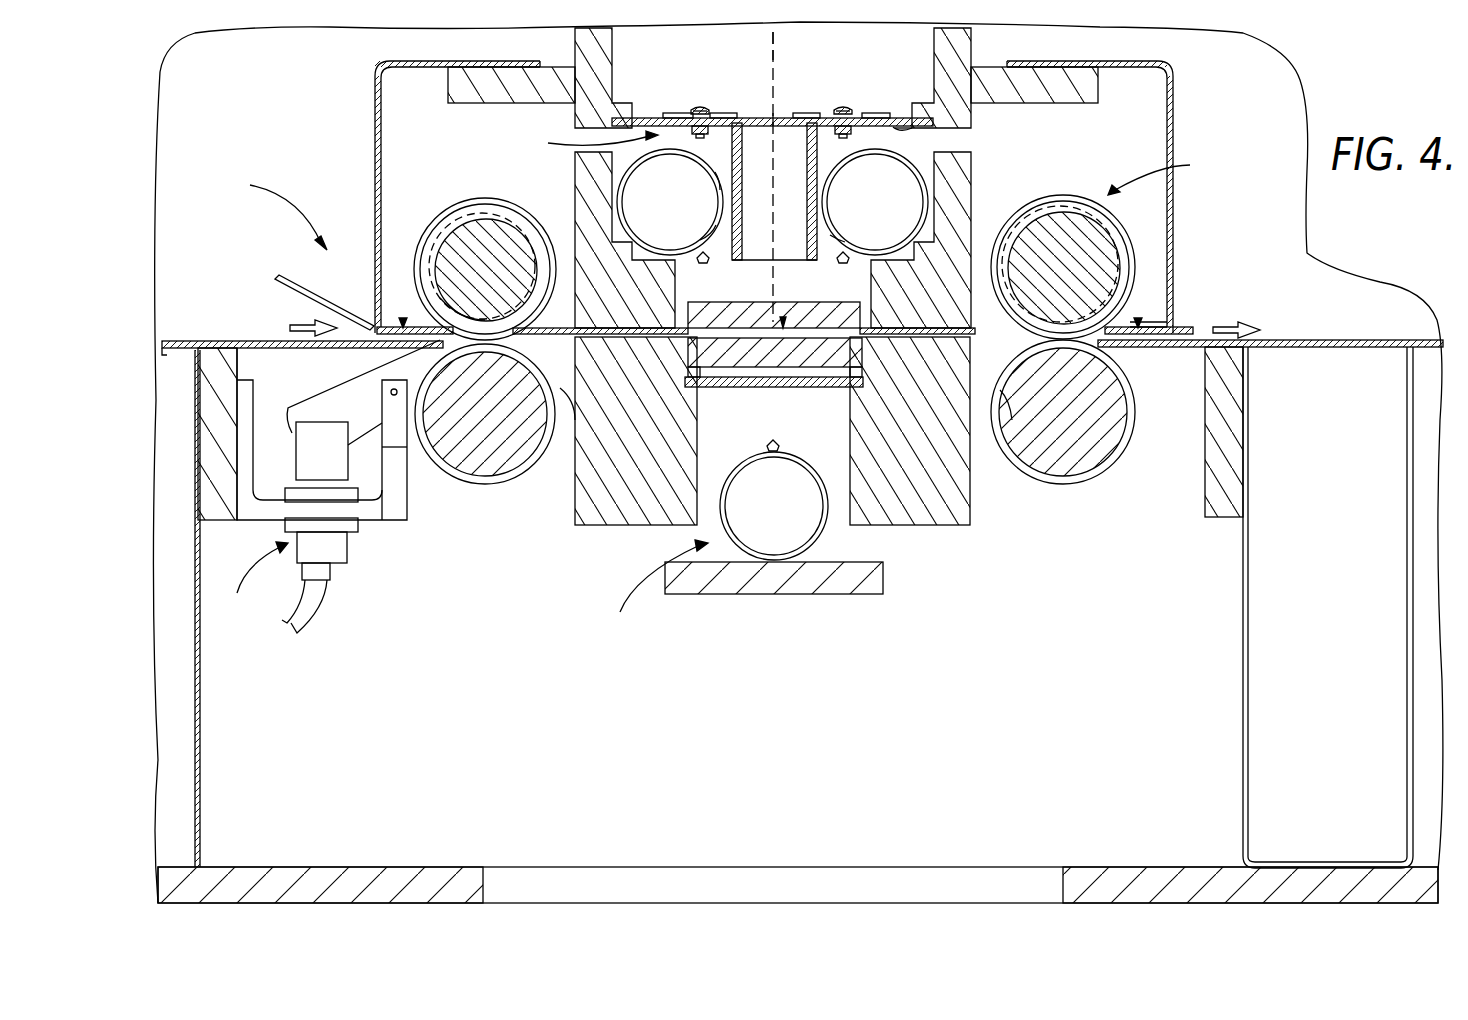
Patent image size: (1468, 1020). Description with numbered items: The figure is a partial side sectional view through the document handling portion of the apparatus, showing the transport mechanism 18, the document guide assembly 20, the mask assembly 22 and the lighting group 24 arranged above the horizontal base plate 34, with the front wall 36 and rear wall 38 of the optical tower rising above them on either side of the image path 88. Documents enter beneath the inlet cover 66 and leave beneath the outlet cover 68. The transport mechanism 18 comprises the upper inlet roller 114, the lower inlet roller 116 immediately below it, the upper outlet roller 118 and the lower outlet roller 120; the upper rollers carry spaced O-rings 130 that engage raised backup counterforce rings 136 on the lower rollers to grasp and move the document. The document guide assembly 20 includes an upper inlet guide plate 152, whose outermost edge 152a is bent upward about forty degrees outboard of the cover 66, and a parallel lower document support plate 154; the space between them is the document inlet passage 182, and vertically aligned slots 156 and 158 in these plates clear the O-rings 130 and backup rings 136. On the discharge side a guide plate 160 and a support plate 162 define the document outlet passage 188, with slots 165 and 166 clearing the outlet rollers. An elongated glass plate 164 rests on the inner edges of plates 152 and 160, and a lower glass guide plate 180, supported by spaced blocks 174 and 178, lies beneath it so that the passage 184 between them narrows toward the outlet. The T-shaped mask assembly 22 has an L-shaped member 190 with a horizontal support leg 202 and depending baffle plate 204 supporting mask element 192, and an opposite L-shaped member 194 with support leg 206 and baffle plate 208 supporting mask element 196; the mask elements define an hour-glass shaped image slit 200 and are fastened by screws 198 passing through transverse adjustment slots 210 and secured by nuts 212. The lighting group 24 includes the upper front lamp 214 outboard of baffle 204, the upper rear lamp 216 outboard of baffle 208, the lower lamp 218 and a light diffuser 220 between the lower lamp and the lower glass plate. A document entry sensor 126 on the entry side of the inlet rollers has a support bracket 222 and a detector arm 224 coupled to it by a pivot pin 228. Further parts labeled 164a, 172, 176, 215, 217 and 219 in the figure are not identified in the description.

The transport mechanism 18 is at (1162, 169).
The document guide assembly 20 is at (272, 207).
The mask assembly 22 is at (550, 144).
The lighting group 24 is at (744, 583).
The horizontal base plate 34 is at (450, 865).
The front wall 36 is at (578, 48).
The rear wall 38 is at (972, 48).
The inlet cover 66 is at (373, 125).
The outlet cover 68 is at (1175, 122).
The image path 88 is at (777, 42).
The upper inlet roller 114 is at (458, 240).
The lower inlet roller 116 is at (510, 445).
The upper outlet roller 118 is at (1045, 218).
The lower outlet roller 120 is at (1035, 460).
The document entry detector 126 is at (284, 560).
The O-rings 130 is at (470, 200).
The backup counterforce rings 136 is at (452, 488).
The upper inlet guide plate 152 is at (570, 326).
The outermost elongated edge 152a is at (285, 272).
The lower inlet document support plate 154 is at (240, 340).
The slots 156 is at (443, 298).
The slots 158 is at (560, 388).
The discharge guide plate 160 is at (1185, 327).
The support plate 162 is at (1150, 350).
The glass plate 164 is at (755, 302).
The lower pressure plate 164a is at (722, 346).
The slots 165 is at (980, 278).
The slots 166 is at (1000, 390).
The left upper frame block 172 is at (583, 230).
The block 174 is at (590, 528).
The right upper frame block 176 is at (975, 230).
The block 178 is at (935, 528).
The lower glass guide plate 180 is at (770, 358).
The document inlet passage 182 is at (403, 322).
The passage 184 is at (784, 316).
The document outlet passage 188 is at (1140, 322).
The L-shaped member 190 is at (636, 118).
The mask element 192 is at (690, 113).
The L-shaped member 194 is at (900, 118).
The mask element 196 is at (810, 118).
The adjustment screw components 198 is at (858, 112).
The image slit 200 is at (757, 100).
The support leg 202 is at (664, 113).
The baffle plate 204 is at (742, 184).
The support leg 206 is at (895, 130).
The baffle plate 208 is at (807, 212).
The transverse adjustment slots 210 is at (846, 110).
The nuts 212 is at (716, 174).
The upper front lamp 214 is at (670, 202).
The roller surface 215 is at (702, 238).
The upper rear lamp 216 is at (875, 202).
The roller surface 217 is at (832, 234).
The lower lamp 218 is at (774, 506).
The force arrow 219 is at (764, 452).
The light diffuser 220 is at (787, 390).
The support bracket 222 is at (380, 521).
The detector arm 224 is at (347, 400).
The pivot pin 228 is at (394, 388).